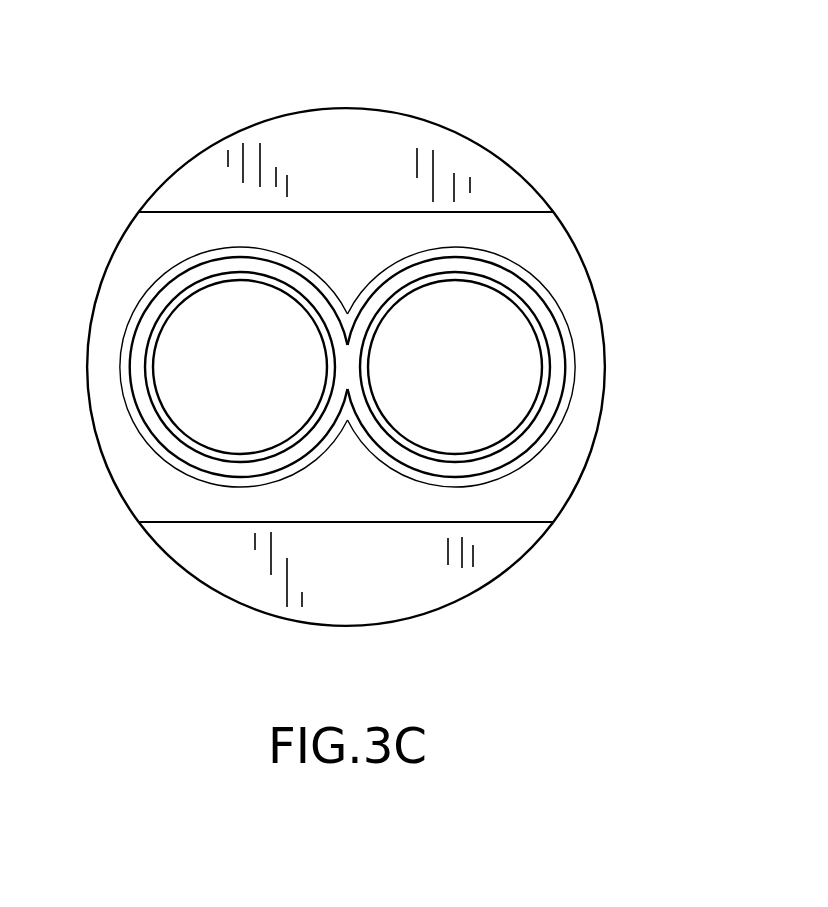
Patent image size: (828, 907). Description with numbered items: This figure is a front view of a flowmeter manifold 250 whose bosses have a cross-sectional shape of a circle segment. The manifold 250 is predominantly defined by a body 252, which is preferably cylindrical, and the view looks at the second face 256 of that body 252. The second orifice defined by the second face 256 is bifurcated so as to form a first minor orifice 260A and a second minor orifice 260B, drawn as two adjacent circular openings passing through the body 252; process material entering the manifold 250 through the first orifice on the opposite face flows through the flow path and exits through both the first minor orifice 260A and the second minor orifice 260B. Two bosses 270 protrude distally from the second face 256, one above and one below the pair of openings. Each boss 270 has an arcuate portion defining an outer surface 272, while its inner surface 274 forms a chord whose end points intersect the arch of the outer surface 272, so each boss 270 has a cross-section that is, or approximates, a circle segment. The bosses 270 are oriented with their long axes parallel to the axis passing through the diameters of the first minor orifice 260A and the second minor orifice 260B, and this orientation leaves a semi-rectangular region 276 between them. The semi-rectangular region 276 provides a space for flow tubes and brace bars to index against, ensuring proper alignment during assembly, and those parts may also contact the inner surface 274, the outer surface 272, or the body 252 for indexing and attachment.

The manifold 250 is at (147, 104).
The body 252 is at (585, 257).
The second face 256 is at (545, 476).
The first minor orifice 260A is at (215, 380).
The second minor orifice 260B is at (430, 380).
The boss 270 is at (327, 178).
The outer surface 272 is at (477, 140).
The inner surface 274 is at (513, 212).
The semi-rectangular region 276 is at (142, 261).